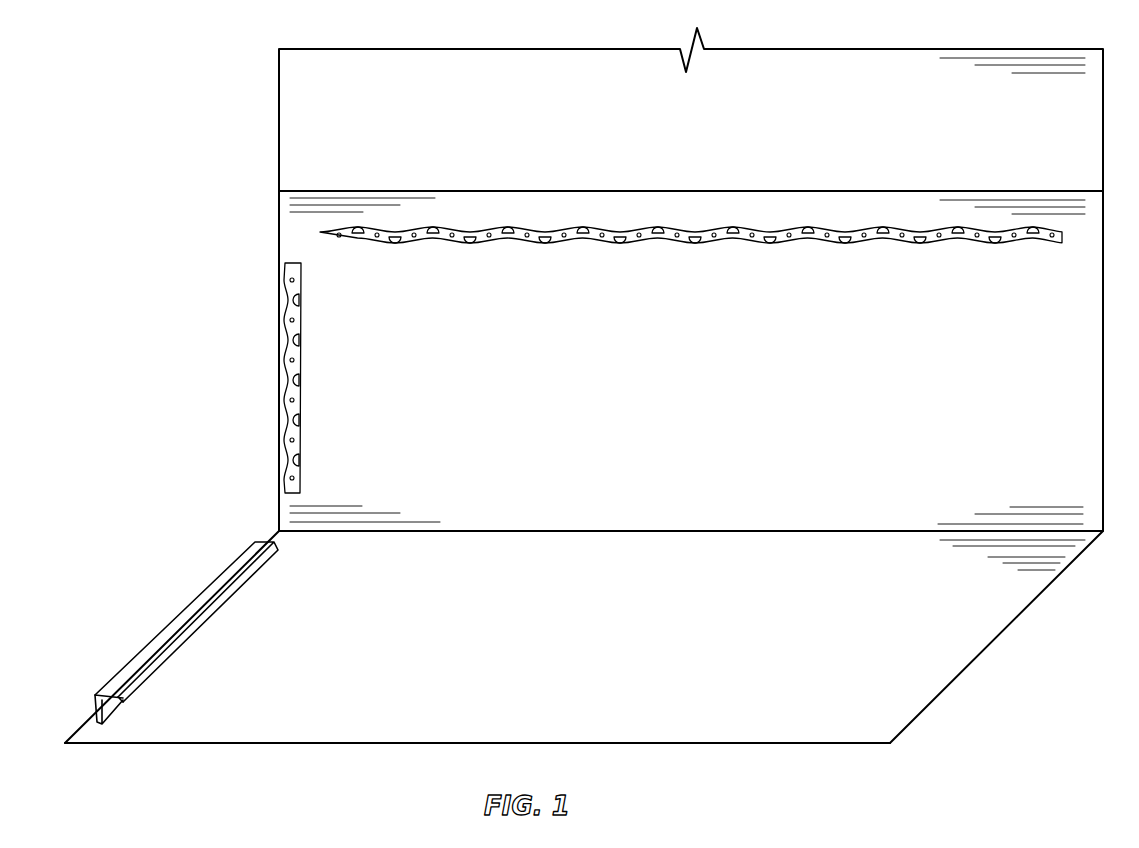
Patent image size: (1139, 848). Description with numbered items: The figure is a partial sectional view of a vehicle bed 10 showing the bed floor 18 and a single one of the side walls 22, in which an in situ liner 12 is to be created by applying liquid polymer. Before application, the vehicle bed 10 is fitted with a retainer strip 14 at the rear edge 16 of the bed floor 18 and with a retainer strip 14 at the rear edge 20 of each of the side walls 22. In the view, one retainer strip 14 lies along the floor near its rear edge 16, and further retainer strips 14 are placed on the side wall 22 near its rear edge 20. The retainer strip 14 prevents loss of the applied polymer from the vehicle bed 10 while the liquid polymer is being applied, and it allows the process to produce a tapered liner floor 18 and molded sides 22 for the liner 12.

The vehicle bed 10 is at (153, 104).
The liner 12 is at (887, 700).
The retainer strip 14 is at (470, 240).
The rear edge 16 is at (100, 696).
The bed floor 18 is at (308, 727).
The rear edge 20 is at (280, 413).
The side walls 22 is at (335, 255).